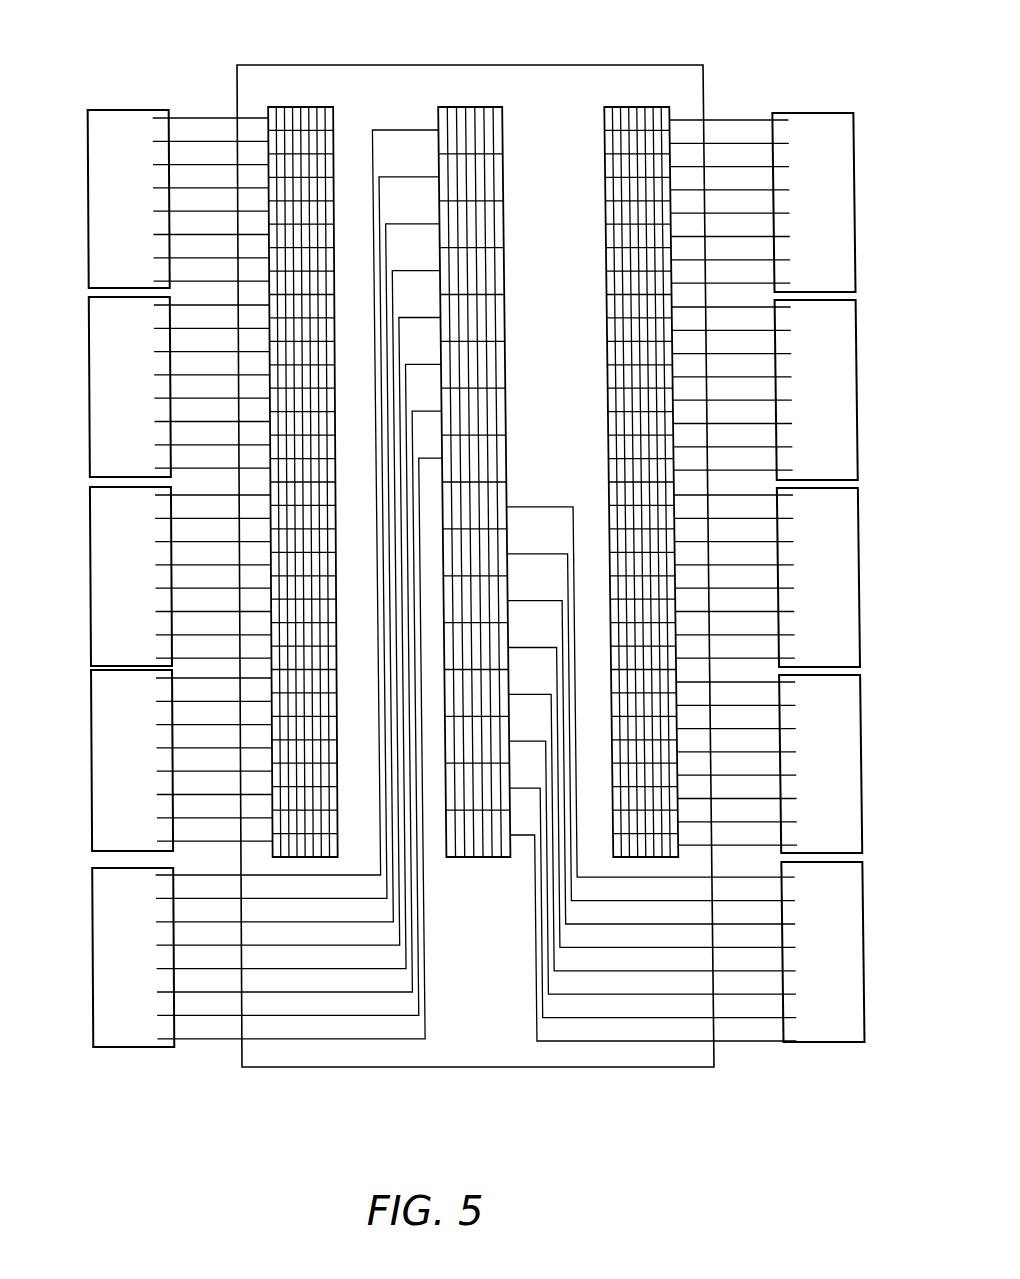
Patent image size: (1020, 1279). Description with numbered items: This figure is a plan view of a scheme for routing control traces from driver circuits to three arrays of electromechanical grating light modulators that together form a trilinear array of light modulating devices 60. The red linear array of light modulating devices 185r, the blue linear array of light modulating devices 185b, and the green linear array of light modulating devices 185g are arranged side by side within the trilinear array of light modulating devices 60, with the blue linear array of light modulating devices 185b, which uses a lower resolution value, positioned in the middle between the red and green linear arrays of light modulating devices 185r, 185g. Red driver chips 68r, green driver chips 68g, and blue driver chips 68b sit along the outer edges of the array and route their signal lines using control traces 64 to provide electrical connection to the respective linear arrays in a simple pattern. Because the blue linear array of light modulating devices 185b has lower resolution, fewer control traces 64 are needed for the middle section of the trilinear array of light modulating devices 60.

The trilinear array of light modulating devices 60 is at (333, 65).
The control traces 64 is at (325, 1020).
The red driver chip 68r is at (88, 397).
The green driver chip 68g is at (854, 203).
The blue driver chip 68b is at (92, 900).
The red linear array of light modulating devices 185r is at (267, 138).
The blue linear array of light modulating devices 185b is at (478, 858).
The green linear array of light modulating devices 185g is at (672, 138).